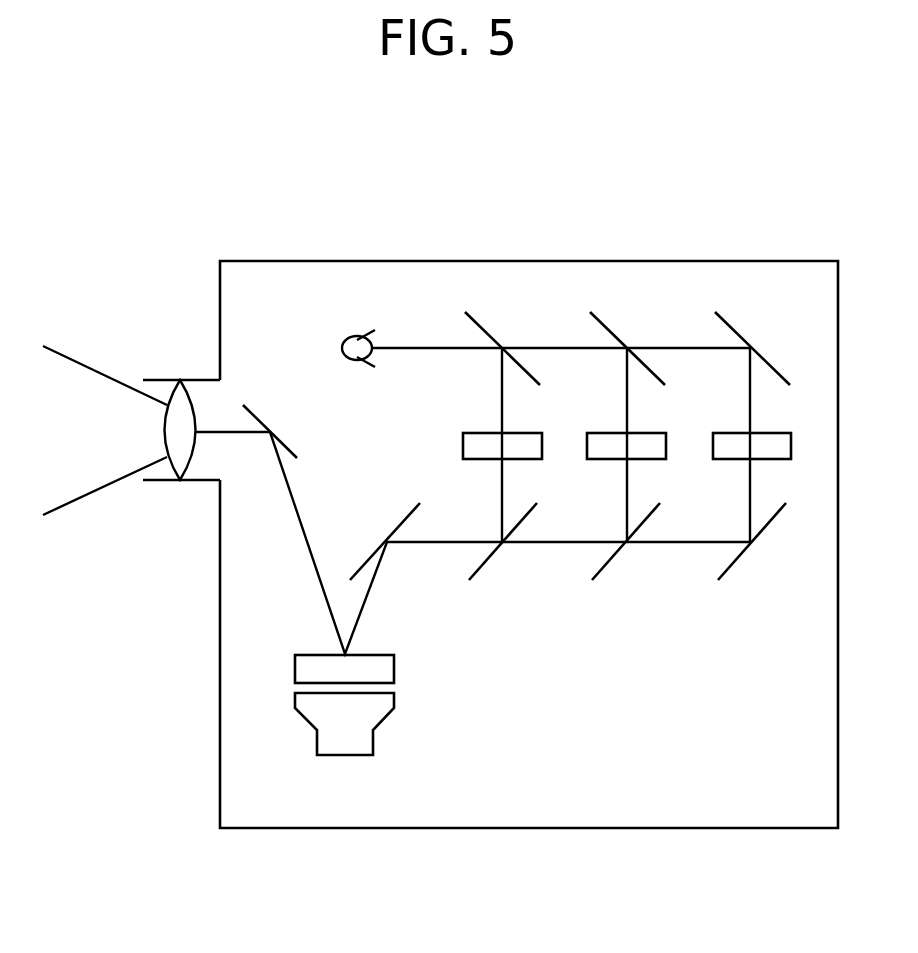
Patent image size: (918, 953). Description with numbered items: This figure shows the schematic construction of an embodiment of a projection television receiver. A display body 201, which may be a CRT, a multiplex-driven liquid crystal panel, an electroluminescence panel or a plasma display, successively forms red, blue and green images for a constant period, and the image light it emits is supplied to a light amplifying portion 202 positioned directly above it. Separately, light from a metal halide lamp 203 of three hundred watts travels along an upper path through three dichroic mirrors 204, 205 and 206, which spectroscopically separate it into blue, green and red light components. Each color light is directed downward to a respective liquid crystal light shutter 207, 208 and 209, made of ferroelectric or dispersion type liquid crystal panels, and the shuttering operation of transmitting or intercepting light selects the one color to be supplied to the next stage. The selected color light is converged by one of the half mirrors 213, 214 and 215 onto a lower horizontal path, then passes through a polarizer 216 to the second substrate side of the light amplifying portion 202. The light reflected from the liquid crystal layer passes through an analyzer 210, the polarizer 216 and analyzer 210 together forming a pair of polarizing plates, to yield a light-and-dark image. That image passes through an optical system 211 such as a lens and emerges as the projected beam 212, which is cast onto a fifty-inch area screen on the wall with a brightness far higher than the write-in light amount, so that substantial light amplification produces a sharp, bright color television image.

The display body 201 is at (337, 755).
The light amplifying portion 202 is at (396, 665).
The metal halide lamp 203 is at (362, 333).
The dichroic mirror 204 is at (486, 328).
The dichroic mirror 205 is at (611, 328).
The dichroic mirror 206 is at (734, 328).
The liquid crystal light shutter 207 is at (487, 432).
The liquid crystal light shutter 208 is at (613, 432).
The liquid crystal light shutter 209 is at (740, 431).
The analyzer 210 is at (337, 589).
The optical system 211 is at (184, 450).
The projected light beam 212 is at (73, 448).
The half mirror 213 is at (735, 562).
The half mirror 214 is at (612, 562).
The half mirror 215 is at (487, 562).
The polarizer 216 is at (374, 604).